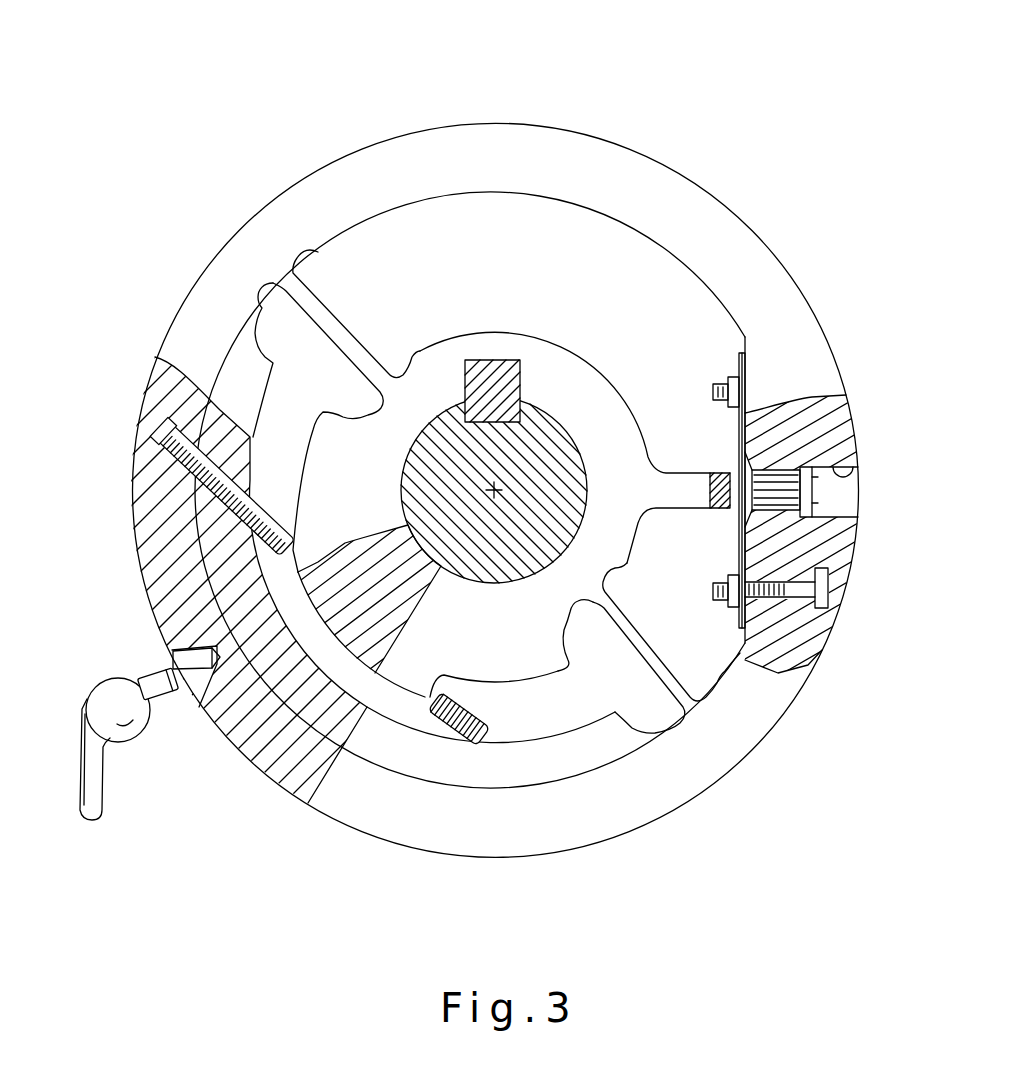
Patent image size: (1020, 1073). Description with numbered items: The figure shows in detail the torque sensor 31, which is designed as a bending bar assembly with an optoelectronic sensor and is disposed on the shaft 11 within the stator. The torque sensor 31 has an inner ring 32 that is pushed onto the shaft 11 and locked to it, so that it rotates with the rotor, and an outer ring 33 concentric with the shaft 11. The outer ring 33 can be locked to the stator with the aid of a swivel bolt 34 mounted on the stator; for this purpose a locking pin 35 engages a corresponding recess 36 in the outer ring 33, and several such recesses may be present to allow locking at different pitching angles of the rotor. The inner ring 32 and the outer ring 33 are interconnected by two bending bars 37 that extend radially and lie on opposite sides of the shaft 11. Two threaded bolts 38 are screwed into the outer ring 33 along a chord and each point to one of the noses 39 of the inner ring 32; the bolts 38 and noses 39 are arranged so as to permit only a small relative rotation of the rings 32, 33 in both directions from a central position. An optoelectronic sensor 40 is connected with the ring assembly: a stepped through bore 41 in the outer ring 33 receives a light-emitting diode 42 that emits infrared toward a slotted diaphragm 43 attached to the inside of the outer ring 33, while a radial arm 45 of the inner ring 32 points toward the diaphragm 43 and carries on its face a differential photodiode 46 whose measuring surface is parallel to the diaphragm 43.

The shaft 11 is at (540, 437).
The torque sensor 31 is at (548, 105).
The inner ring 32 is at (537, 336).
The outer ring 33 is at (318, 187).
The swivel bolt 34 is at (97, 775).
The locking pin 35 is at (150, 680).
The recess 36 is at (200, 670).
The bending bars 37 is at (337, 327).
The threaded bolts 38 is at (158, 440).
The noses 39 is at (303, 557).
The optoelectronic sensor 40 is at (722, 538).
The stepped through bore 41 is at (858, 472).
The light-emitting diode 42 is at (783, 500).
The diaphragm 43 is at (737, 438).
The radial arm 45 is at (670, 490).
The differential photodiode 46 is at (718, 518).